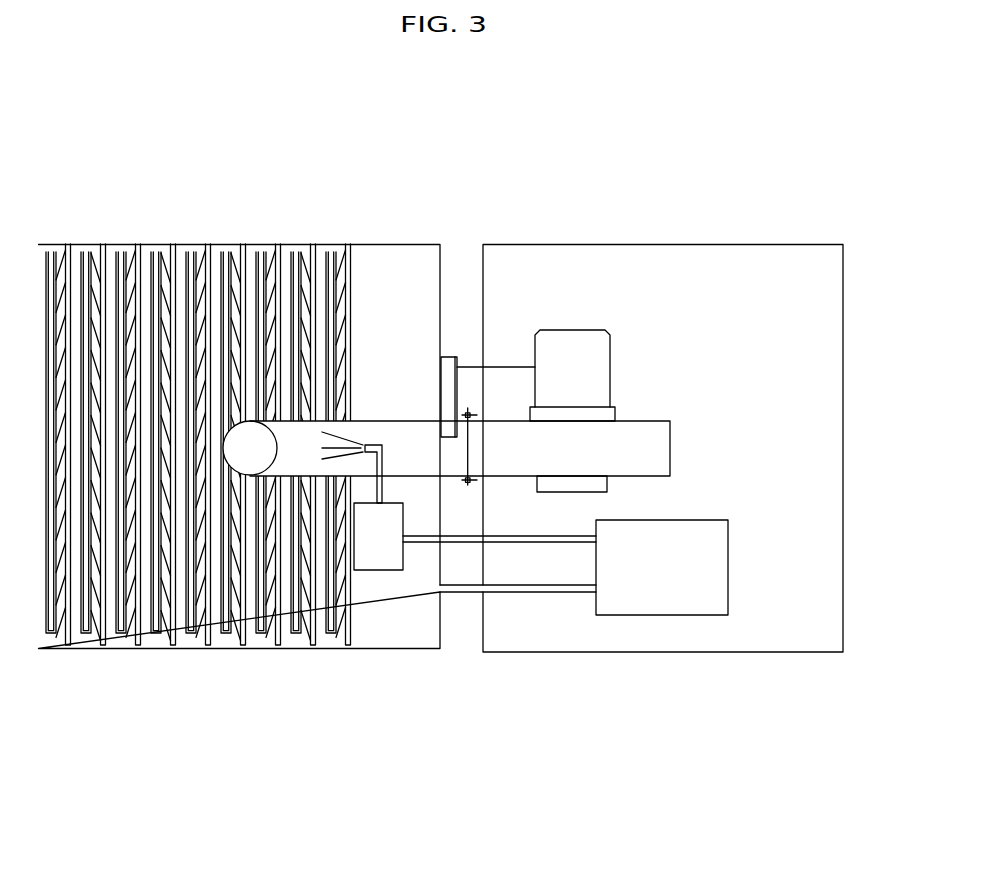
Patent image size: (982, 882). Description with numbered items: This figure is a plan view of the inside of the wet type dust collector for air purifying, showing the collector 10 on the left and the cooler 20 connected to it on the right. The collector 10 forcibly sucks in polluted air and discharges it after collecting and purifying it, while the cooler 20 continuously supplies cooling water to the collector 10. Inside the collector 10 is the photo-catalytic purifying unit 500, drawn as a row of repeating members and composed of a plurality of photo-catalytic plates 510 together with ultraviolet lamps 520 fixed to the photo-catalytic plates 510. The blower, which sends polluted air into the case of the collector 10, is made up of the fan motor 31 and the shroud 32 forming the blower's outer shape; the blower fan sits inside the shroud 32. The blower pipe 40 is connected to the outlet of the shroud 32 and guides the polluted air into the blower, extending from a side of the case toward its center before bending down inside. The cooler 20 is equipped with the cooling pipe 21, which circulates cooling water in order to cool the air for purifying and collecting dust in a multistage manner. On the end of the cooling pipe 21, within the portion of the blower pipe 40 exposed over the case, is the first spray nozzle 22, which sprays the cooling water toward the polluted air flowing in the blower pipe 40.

The collector 10 is at (240, 425).
The cooler 20 is at (798, 220).
The cooling pipe 21 is at (470, 539).
The first spray nozzle 22 is at (375, 443).
The fan motor 31 is at (583, 347).
The shroud 32 is at (643, 432).
The blower pipe 40 is at (362, 405).
The photo-catalytic purifying unit 500 is at (198, 367).
The photo-catalytic plate 510 is at (137, 253).
The ultraviolet lamp 520 is at (106, 253).